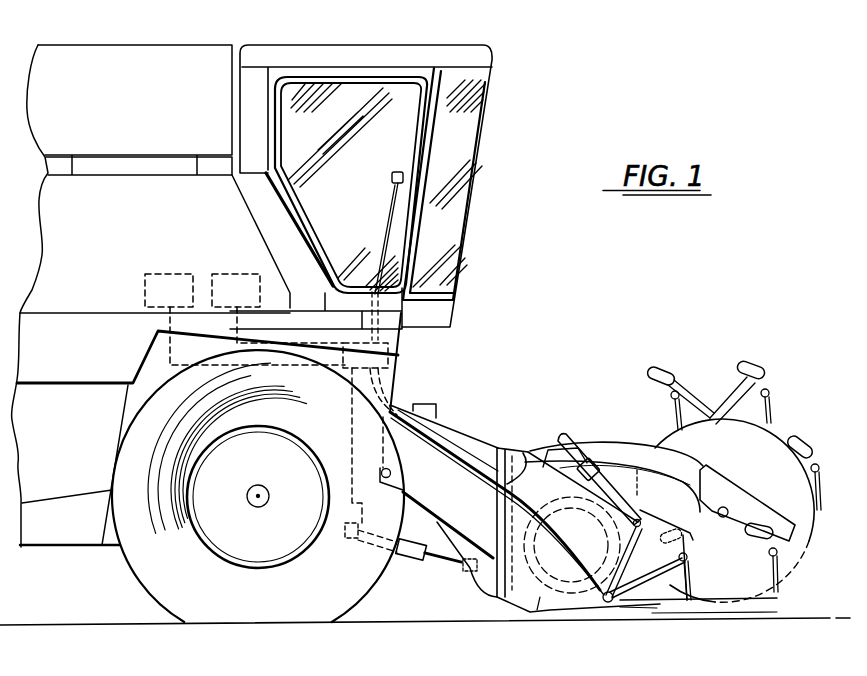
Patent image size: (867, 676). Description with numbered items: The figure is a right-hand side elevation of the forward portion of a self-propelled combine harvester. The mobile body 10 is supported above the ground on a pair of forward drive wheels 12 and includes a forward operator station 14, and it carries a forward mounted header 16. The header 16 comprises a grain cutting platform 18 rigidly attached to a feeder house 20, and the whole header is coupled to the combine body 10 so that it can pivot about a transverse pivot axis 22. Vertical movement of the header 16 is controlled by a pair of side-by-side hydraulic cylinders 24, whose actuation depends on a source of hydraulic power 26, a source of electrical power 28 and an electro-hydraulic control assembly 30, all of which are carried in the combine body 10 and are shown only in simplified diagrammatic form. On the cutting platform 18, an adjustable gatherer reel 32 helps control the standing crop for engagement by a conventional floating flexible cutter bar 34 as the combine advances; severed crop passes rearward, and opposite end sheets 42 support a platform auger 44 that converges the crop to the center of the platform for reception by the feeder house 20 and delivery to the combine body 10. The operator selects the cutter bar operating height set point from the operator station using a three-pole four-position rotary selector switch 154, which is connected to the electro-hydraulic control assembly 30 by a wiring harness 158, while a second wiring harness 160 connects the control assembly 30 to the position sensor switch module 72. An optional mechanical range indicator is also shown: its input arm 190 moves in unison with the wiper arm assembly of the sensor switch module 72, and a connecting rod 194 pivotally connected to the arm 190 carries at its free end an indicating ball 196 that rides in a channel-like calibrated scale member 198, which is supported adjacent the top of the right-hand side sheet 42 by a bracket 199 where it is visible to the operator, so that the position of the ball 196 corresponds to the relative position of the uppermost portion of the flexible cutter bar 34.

The mobile body 10 is at (186, 36).
The forward drive wheels 12 is at (138, 586).
The forward operator station 14 is at (468, 53).
The header 16 is at (578, 352).
The grain cutting platform 18 is at (732, 597).
The feeder house 20 is at (465, 434).
The transverse pivot axis 22 is at (392, 478).
The hydraulic cylinders 24 is at (404, 560).
The source of hydraulic power 26 is at (163, 272).
The source of electrical power 28 is at (234, 272).
The electro-hydraulic control assembly 30 is at (395, 363).
The adjustable gatherer reel 32 is at (772, 432).
The floating flexible cutter bar 34 is at (652, 612).
The end sheets 42 is at (690, 543).
The platform auger 44 is at (540, 599).
The position sensor switch module 72 is at (645, 587).
The rotary selector switch 154 is at (390, 178).
The wiring harness 158 is at (388, 218).
The second wiring harness 160 is at (395, 412).
The arm 190 is at (633, 582).
The connecting rod 194 is at (618, 490).
The indicating ball 196 is at (573, 455).
The calibrated scale member 198 is at (577, 457).
The bracket 199 is at (552, 455).